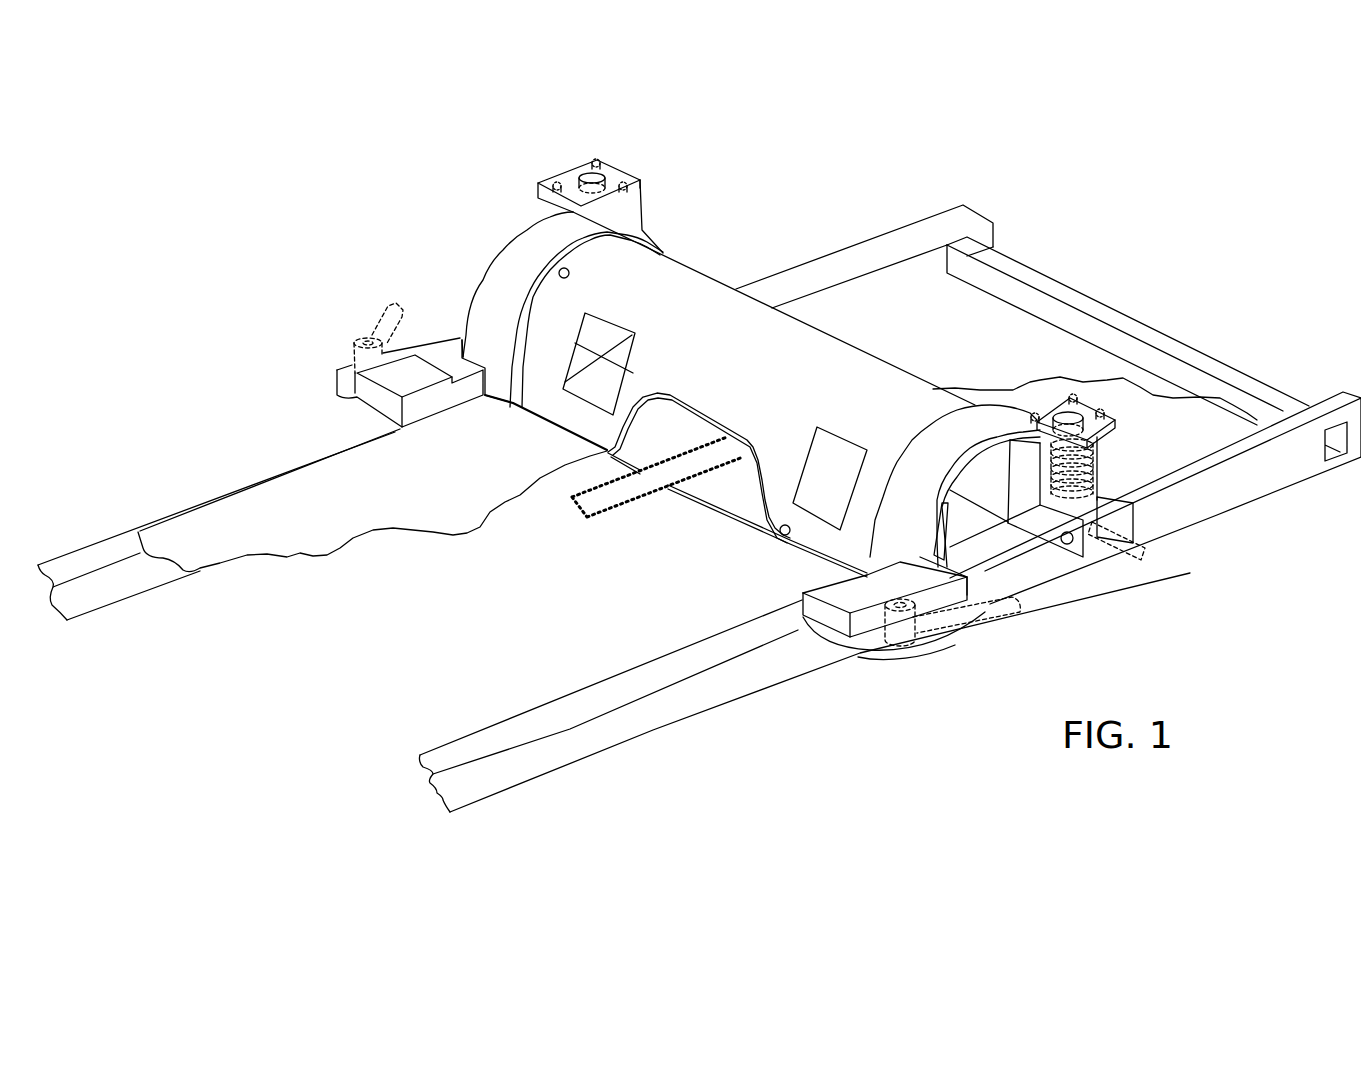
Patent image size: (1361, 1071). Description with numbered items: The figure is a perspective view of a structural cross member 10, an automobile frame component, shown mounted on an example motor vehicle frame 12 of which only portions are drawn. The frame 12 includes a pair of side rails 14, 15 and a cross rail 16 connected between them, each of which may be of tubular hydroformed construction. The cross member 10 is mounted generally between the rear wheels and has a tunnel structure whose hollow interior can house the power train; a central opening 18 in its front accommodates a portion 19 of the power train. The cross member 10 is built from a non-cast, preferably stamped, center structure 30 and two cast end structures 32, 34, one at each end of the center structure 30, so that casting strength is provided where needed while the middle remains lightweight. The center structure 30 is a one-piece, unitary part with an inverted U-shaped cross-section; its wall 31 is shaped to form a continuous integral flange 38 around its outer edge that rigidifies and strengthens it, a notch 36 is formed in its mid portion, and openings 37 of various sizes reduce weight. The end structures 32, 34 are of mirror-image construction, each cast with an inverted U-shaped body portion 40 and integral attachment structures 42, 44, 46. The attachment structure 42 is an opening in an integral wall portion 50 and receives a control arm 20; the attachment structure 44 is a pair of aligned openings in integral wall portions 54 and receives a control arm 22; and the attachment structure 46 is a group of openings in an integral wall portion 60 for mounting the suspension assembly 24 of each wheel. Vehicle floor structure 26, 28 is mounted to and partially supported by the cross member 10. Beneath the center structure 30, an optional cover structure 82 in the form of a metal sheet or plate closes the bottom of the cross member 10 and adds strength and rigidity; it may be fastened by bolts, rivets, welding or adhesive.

The cross member 10 is at (730, 356).
The motor vehicle frame 12 is at (1048, 370).
The side rail 14 is at (1258, 475).
The side rail 15 is at (815, 272).
The cross rail 16 is at (1124, 320).
The central opening 18 is at (712, 490).
The portion of the power train 19 is at (627, 503).
The control arm 20 is at (352, 331).
The control arm 22 is at (1120, 560).
The suspension assembly 24 is at (1098, 465).
The vehicle floor structure 26 is at (487, 508).
The vehicle floor structure 28 is at (1253, 423).
The center structure 30 is at (730, 400).
The wall 31 is at (840, 363).
The end structure 32 is at (900, 662).
The end structure 34 is at (823, 339).
The notch 36 is at (632, 428).
The openings 37 is at (612, 362).
The flange 38 is at (560, 270).
The body portion 40 is at (540, 215).
The attachment structure 42 is at (670, 504).
The attachment structure 44 is at (1079, 526).
The attachment structure 46 is at (612, 148).
The wall portion 50 is at (942, 647).
The wall portions 54 is at (1135, 528).
The wall portion 60 is at (1110, 432).
The cover structure 82 is at (753, 530).